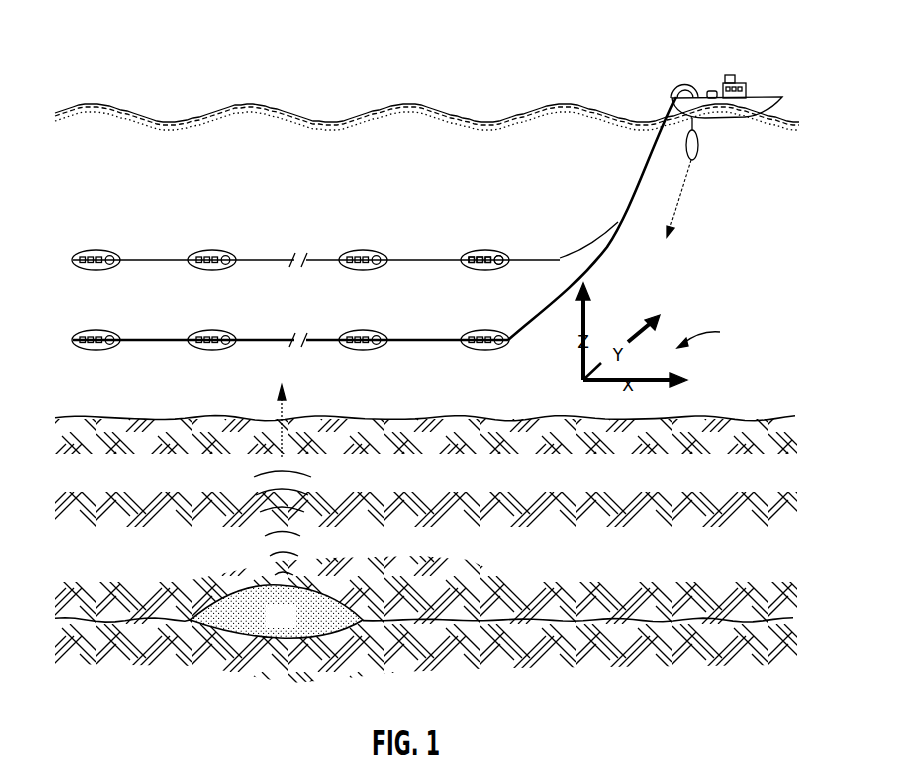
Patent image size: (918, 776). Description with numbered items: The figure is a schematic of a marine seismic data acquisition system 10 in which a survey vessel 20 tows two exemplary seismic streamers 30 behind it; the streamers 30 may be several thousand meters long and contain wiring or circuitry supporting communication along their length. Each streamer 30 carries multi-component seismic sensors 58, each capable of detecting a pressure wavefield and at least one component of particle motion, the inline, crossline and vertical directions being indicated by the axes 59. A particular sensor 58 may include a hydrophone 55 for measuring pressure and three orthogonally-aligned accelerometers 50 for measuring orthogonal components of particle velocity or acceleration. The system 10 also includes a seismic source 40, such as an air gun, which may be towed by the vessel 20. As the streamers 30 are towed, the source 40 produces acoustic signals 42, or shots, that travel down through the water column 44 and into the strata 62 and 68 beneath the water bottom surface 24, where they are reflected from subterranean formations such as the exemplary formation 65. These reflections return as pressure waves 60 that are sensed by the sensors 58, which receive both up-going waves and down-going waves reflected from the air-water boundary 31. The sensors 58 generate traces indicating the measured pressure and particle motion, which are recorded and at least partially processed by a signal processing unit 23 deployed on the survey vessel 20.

The marine seismic data acquisition system 10 is at (237, 78).
The survey vessel 20 is at (777, 92).
The signal processing unit 23 is at (711, 90).
The water bottom surface 24 is at (692, 410).
The seismic streamer 30 is at (640, 183).
The air-water boundary 31 is at (378, 104).
The seismic source 40 is at (698, 145).
The acoustic signal 42 is at (684, 190).
The water column 44 is at (696, 288).
The accelerometer 50 is at (487, 256).
The hydrophone 55 is at (500, 256).
The multi-component seismic sensor 58 is at (92, 250).
The axes 59 is at (711, 337).
The pressure waves 60 is at (252, 537).
The strata 62 is at (407, 598).
The formation 65 is at (269, 626).
The strata 68 is at (407, 661).